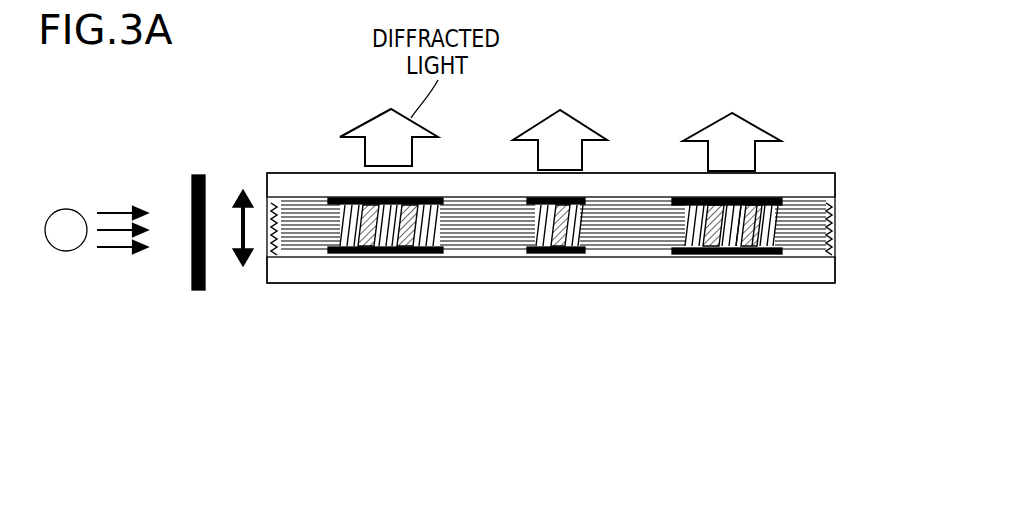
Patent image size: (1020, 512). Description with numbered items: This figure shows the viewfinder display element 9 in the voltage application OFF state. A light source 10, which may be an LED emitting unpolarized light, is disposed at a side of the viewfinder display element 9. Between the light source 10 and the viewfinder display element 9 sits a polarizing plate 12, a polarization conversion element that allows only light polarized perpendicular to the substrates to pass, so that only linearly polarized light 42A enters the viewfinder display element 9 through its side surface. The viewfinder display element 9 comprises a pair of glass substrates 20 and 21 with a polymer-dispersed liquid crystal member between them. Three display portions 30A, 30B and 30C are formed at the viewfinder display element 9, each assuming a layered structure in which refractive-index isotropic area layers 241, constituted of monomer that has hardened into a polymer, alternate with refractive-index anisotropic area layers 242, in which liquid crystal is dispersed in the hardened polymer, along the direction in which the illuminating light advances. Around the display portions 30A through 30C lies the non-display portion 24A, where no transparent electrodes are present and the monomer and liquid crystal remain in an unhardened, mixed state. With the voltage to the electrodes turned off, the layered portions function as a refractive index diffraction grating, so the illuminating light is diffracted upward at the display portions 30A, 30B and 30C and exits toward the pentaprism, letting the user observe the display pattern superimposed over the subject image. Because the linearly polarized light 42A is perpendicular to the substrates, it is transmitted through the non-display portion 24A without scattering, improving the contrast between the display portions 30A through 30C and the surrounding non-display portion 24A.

The viewfinder display element 9 is at (828, 162).
The light source 10 is at (52, 248).
The polarizing plate 12 is at (198, 172).
The glass substrate 20 is at (838, 185).
The glass substrate 21 is at (830, 272).
The non-display portion 24A is at (302, 245).
The display portion 30A is at (439, 255).
The display portion 30B is at (579, 255).
The display portion 30C is at (783, 255).
The linearly polarized light 42A is at (244, 266).
The refractive-index isotropic area layer 241 is at (740, 245).
The refractive-index anisotropic area layer 242 is at (755, 255).